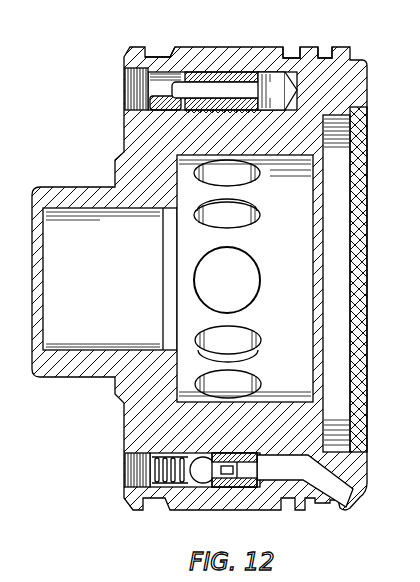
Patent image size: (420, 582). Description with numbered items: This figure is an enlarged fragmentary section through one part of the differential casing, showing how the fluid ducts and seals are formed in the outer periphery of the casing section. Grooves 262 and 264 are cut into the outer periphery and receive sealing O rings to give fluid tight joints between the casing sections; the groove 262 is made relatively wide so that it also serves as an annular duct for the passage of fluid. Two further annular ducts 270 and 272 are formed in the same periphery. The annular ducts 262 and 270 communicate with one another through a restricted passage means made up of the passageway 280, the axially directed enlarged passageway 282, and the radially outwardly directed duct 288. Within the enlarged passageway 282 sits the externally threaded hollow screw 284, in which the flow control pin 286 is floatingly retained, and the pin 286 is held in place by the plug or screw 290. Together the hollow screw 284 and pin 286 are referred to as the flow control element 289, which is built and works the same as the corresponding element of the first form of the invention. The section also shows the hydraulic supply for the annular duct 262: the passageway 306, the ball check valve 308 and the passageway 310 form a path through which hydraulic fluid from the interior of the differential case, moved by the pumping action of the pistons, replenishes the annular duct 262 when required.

The groove 262 is at (153, 47).
The groove 264 is at (330, 58).
The annular duct 270 is at (287, 46).
The annular duct 272 is at (327, 57).
The passageway 280 is at (170, 55).
The axially directed enlarged passageway 282 is at (160, 102).
The externally threaded hollow screw 284 is at (216, 80).
The flow control pin 286 is at (236, 72).
The radially outwardly directed duct 288 is at (283, 72).
The flow control element 289 is at (202, 113).
The plug or screw 290 is at (128, 88).
The passageway 306 is at (173, 499).
The ball check valve 308 is at (224, 488).
The passageway 310 is at (353, 496).